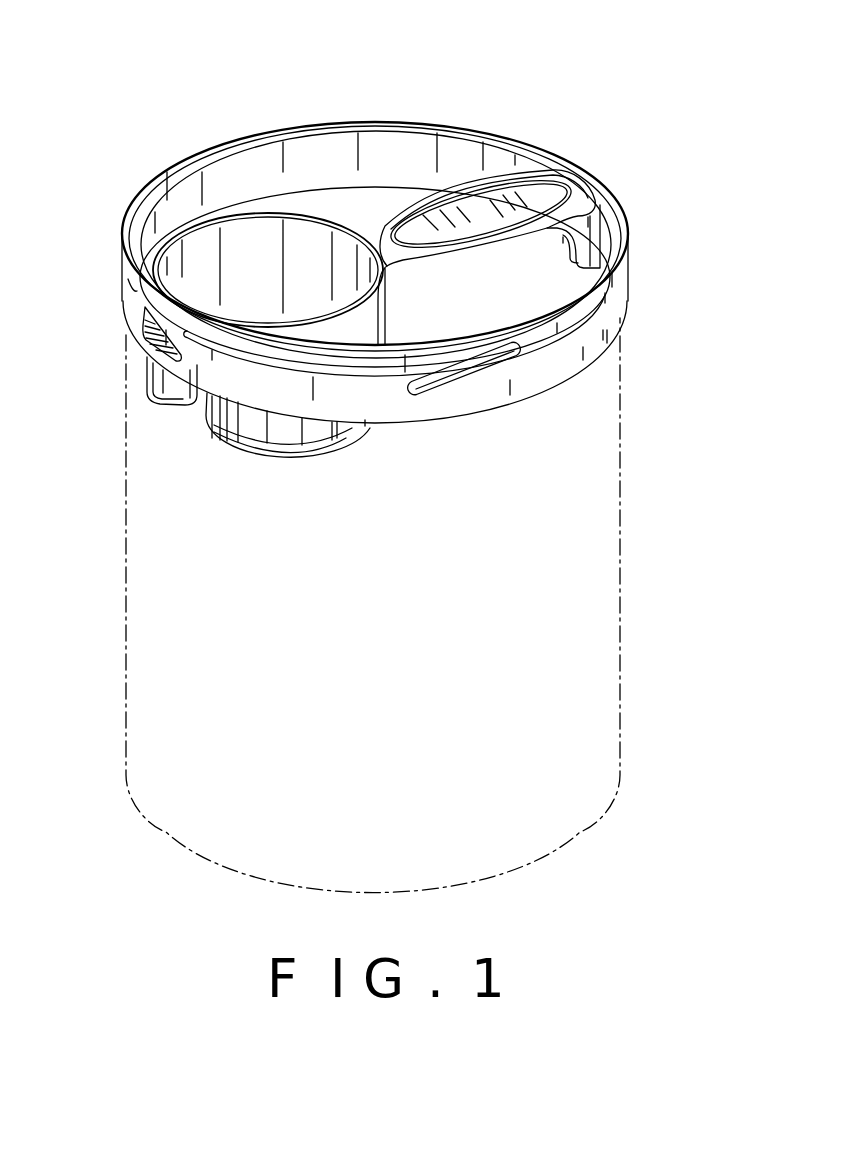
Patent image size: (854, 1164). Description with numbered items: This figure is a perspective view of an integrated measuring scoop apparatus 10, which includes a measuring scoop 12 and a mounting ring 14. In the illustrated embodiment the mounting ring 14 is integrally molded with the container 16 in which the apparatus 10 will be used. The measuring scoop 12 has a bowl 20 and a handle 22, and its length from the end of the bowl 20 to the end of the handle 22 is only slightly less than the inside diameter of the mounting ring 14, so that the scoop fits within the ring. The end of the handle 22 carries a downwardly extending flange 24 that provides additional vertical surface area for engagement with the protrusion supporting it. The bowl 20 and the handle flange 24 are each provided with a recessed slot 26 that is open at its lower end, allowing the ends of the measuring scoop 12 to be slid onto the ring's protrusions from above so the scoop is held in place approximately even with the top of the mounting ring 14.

The integrated measuring scoop apparatus 10 is at (566, 78).
The measuring scoop 12 is at (547, 178).
The mounting ring 14 is at (595, 344).
The container 16 is at (627, 651).
The bowl 20 is at (293, 447).
The handle 22 is at (620, 213).
The downwardly extending flange 24 is at (587, 243).
The recessed slot 26 is at (191, 402).